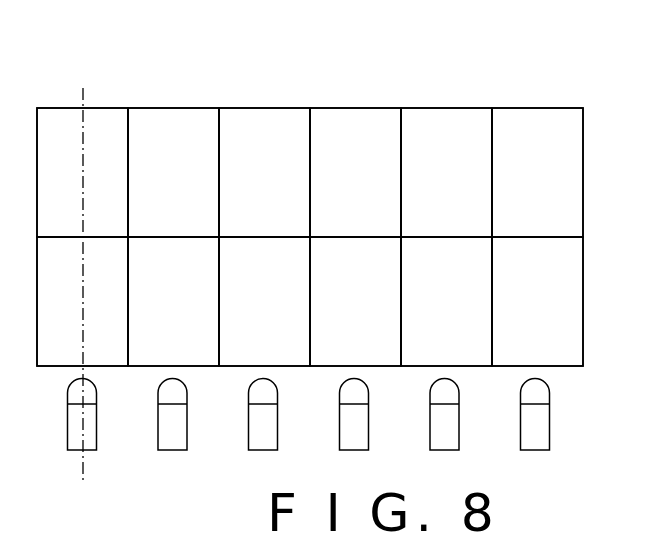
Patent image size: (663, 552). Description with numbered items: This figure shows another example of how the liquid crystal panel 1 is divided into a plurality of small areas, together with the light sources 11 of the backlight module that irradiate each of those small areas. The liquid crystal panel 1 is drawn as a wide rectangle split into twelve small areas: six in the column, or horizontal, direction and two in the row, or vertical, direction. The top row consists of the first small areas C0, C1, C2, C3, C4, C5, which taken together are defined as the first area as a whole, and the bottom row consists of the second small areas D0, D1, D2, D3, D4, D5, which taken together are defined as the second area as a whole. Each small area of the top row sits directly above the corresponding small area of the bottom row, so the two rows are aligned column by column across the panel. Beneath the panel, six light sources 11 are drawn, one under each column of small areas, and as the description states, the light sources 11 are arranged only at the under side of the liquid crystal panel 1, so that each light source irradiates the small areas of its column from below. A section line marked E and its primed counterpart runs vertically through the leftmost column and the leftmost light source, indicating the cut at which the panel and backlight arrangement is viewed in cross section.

The liquid crystal panel 1 is at (523, 108).
The light sources 11 is at (329, 415).
The section line E-E' E is at (83, 283).
The small area C0 is at (82, 172).
The small area C1 is at (173, 172).
The small area C2 is at (264, 172).
The small area C3 is at (355, 172).
The small area C4 is at (446, 172).
The small area C5 is at (537, 172).
The small area D0 is at (82, 301).
The small area D1 is at (173, 301).
The small area D2 is at (264, 301).
The small area D3 is at (355, 301).
The small area D4 is at (446, 301).
The small area D5 is at (537, 301).